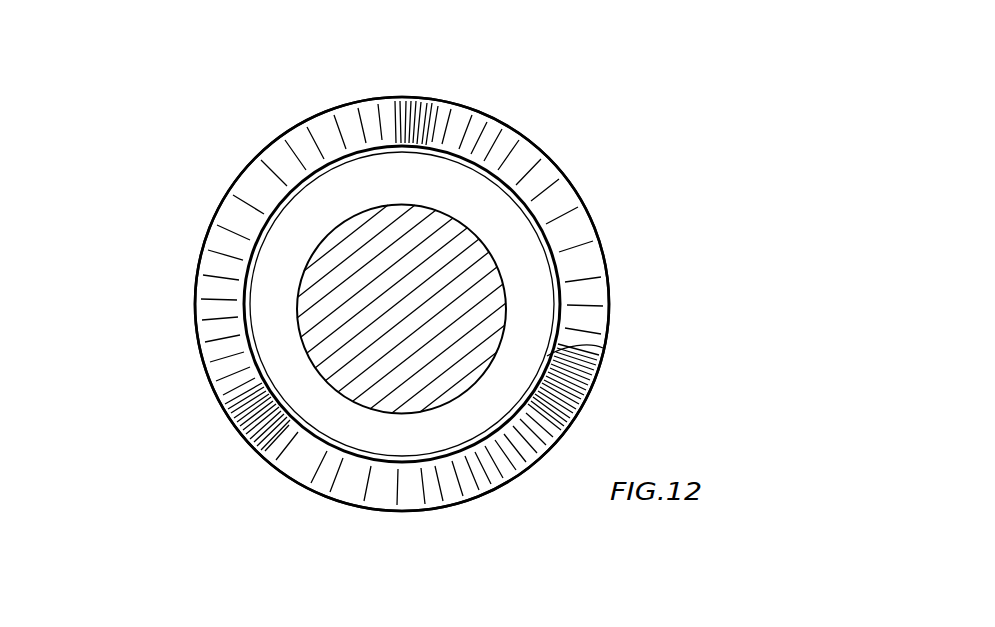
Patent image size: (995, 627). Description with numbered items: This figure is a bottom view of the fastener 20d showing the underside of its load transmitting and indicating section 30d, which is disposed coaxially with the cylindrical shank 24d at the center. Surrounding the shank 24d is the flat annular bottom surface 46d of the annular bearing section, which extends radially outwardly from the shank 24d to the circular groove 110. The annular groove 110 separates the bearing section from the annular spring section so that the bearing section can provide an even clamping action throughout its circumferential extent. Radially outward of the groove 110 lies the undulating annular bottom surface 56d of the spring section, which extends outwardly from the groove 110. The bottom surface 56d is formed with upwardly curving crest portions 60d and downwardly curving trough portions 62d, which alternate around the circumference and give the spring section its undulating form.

The fastener 20d is at (690, 198).
The load transmitting and indicating section 30d is at (606, 341).
The upwardly curving crest portions 60d is at (262, 178).
The downwardly curving trough portions 62d is at (405, 130).
The flat annular bottom surface 46d is at (530, 283).
The annular groove 110 is at (602, 349).
The shank 24d is at (348, 373).
The undulating annular bottom surface 56d is at (430, 492).